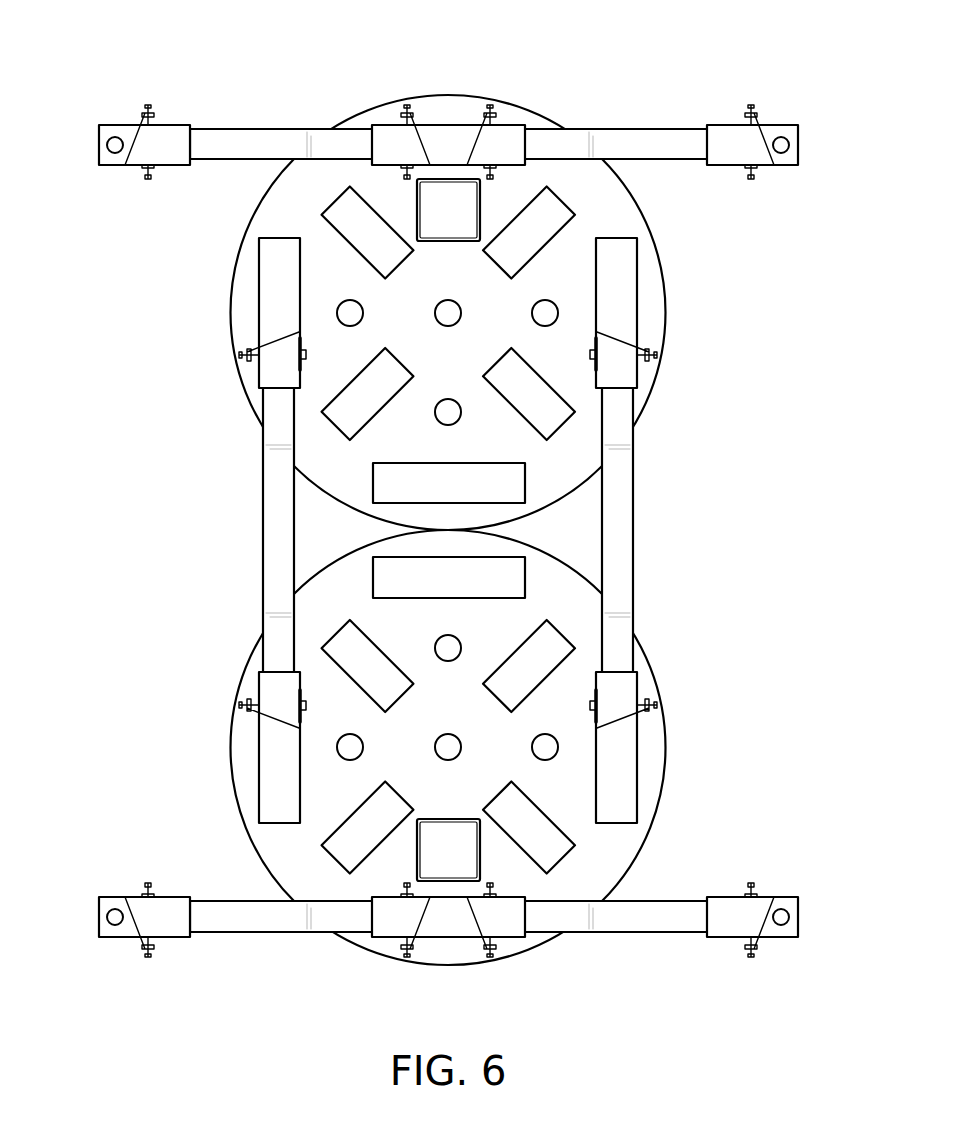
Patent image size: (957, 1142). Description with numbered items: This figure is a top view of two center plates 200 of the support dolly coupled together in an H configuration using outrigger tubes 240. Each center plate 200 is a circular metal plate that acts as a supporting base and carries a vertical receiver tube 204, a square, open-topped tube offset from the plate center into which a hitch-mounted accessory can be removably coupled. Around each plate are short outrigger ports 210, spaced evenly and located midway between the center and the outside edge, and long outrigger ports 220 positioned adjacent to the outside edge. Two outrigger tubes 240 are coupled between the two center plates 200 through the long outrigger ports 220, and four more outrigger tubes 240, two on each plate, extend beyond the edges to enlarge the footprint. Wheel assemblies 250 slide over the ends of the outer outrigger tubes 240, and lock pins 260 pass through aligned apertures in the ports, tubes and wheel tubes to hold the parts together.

The center plate 200 is at (255, 208).
The vertical receiver tube 204 is at (480, 210).
The short outrigger ports 210 is at (563, 202).
The long outrigger ports 220 is at (259, 278).
The outrigger tubes 240 is at (221, 130).
The wheel assemblies 250 is at (107, 125).
The lock pins 260 is at (150, 108).